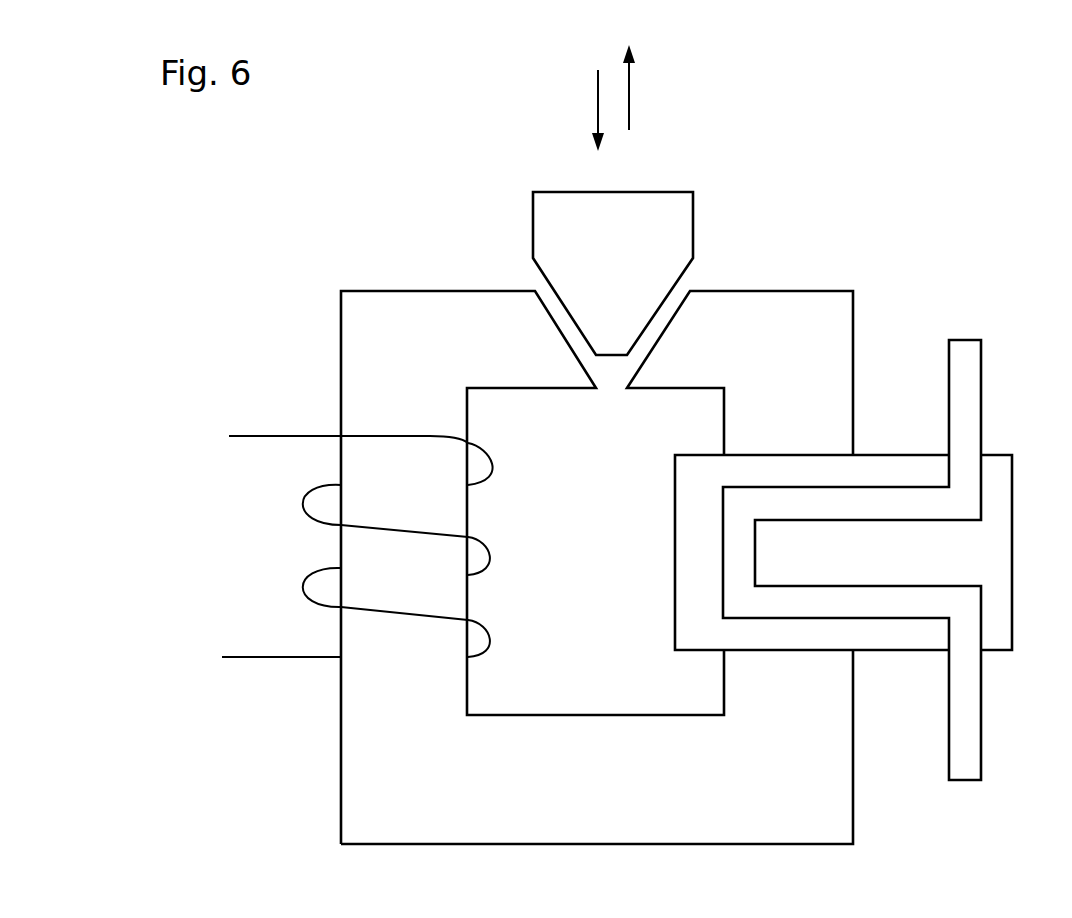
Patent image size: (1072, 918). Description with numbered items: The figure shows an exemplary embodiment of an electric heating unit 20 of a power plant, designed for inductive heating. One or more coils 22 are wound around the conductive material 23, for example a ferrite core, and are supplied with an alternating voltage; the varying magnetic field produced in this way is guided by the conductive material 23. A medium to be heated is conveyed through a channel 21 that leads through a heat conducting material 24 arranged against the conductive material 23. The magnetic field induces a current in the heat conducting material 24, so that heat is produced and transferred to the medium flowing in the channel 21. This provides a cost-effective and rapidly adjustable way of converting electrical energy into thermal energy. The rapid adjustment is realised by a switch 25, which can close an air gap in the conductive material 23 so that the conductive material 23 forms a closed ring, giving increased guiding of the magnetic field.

The electric heating unit 20 is at (924, 138).
The channel 21 is at (981, 722).
The coil 22 is at (240, 436).
The conductive material 23 is at (606, 784).
The heat conducting material 24 is at (977, 556).
The switch 25 is at (621, 256).